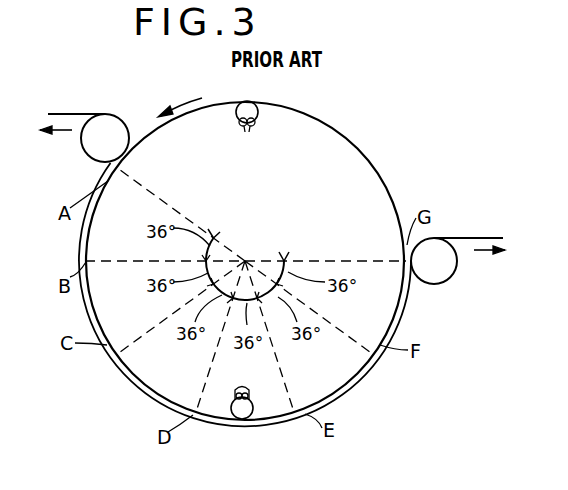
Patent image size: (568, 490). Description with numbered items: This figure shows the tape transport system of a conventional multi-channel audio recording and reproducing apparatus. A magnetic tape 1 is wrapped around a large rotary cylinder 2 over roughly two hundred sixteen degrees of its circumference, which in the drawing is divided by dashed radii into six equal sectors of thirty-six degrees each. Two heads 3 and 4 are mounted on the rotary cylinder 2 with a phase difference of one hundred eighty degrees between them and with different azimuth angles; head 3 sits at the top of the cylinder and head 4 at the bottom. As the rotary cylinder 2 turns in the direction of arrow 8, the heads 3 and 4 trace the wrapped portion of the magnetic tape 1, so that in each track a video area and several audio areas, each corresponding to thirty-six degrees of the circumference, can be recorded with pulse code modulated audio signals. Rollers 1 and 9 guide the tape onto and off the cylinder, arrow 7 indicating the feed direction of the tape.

The magnetic tape 1 is at (461, 238).
The rotary cylinder 2 is at (386, 194).
The head 3 is at (260, 113).
The head 4 is at (255, 405).
The feed direction arrow 7 is at (481, 252).
The drum rotation arrow 8 is at (177, 107).
The exit roller 9 is at (62, 131).